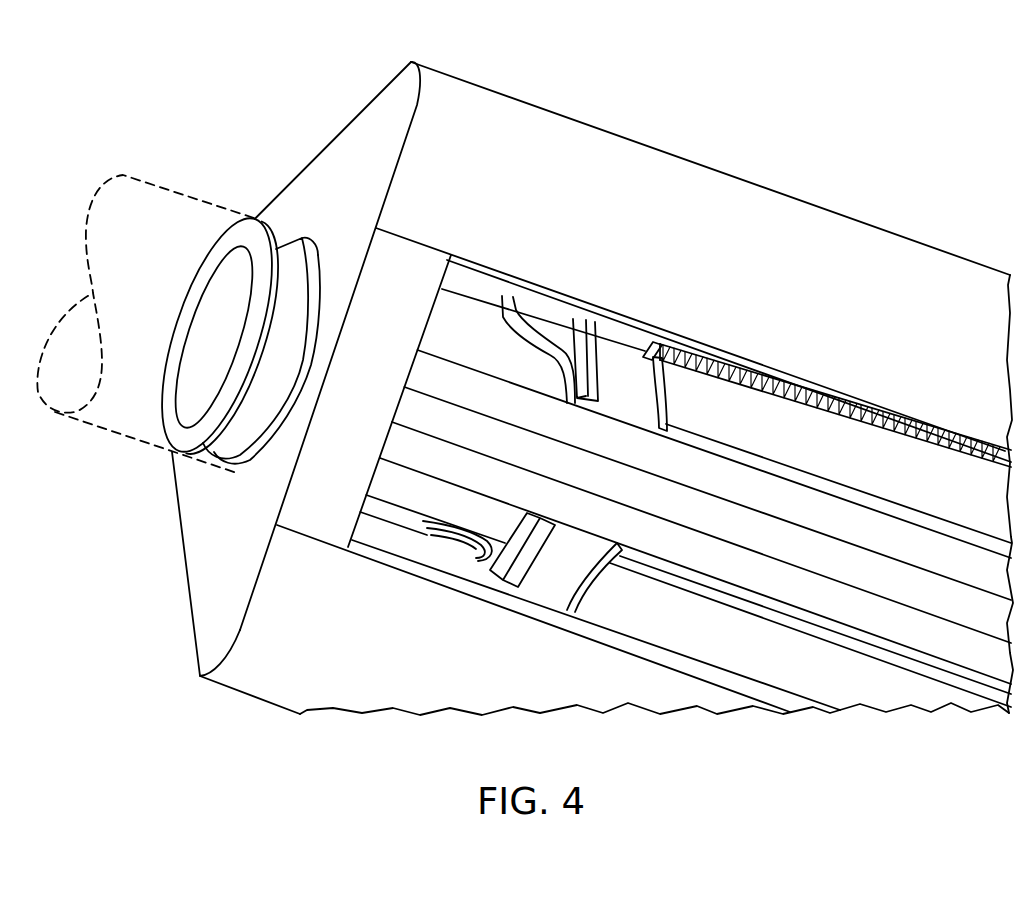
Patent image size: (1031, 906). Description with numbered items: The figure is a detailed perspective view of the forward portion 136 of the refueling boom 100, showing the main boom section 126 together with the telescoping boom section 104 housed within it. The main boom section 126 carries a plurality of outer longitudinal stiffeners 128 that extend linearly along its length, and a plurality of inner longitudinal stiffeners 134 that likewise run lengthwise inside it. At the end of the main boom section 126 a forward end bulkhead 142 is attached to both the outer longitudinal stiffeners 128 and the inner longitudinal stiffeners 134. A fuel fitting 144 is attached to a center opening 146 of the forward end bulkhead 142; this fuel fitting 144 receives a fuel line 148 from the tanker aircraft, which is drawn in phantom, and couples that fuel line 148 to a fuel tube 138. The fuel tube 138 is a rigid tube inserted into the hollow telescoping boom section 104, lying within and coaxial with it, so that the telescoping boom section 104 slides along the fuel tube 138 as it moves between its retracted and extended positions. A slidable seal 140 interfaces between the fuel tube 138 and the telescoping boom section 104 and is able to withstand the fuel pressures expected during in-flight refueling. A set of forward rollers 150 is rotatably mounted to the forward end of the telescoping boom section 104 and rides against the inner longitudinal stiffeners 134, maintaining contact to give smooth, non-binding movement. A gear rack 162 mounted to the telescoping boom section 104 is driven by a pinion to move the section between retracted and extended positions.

The refueling boom 100 is at (825, 133).
The telescoping boom section 104 is at (635, 622).
The main boom section 126 is at (683, 152).
The outer longitudinal stiffeners 128 is at (912, 240).
The inner longitudinal stiffeners 134 is at (560, 300).
The forward portion 136 is at (250, 137).
The fuel tube 138 is at (447, 322).
The slidable seal 140 is at (487, 565).
The forward end bulkhead 142 is at (178, 524).
The fuel fitting 144 is at (162, 428).
The center opening 146 is at (311, 250).
The fuel line 148 is at (163, 184).
The forward rollers 150 is at (500, 320).
The gear rack 162 is at (758, 362).